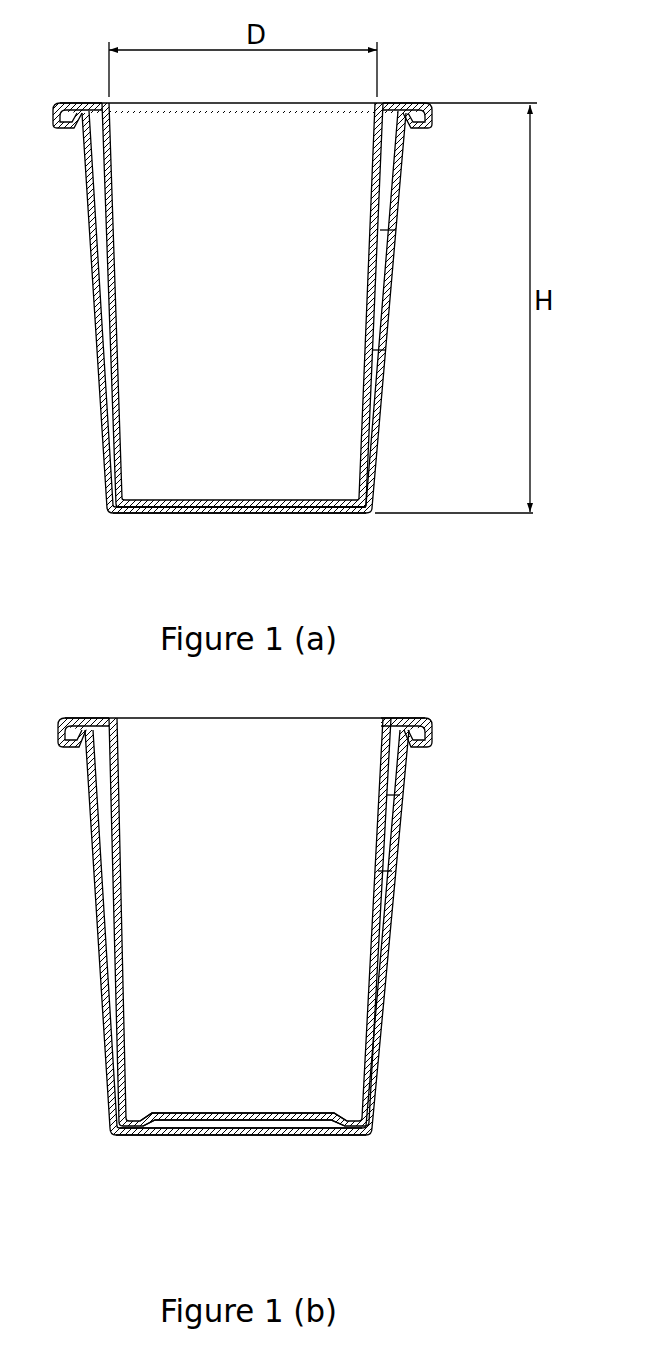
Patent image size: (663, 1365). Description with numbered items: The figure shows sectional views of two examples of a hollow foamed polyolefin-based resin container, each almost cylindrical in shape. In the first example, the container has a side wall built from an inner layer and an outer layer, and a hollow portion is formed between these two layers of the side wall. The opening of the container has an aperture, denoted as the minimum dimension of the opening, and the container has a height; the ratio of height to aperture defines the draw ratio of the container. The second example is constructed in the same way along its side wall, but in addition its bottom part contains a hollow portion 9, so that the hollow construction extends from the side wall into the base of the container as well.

The hollow portion 9 is at (222, 1124).